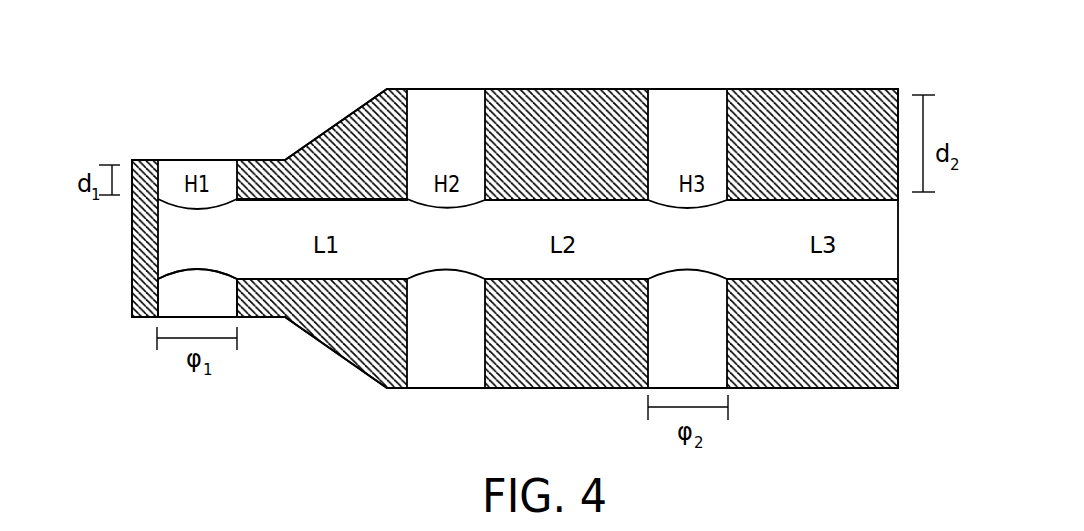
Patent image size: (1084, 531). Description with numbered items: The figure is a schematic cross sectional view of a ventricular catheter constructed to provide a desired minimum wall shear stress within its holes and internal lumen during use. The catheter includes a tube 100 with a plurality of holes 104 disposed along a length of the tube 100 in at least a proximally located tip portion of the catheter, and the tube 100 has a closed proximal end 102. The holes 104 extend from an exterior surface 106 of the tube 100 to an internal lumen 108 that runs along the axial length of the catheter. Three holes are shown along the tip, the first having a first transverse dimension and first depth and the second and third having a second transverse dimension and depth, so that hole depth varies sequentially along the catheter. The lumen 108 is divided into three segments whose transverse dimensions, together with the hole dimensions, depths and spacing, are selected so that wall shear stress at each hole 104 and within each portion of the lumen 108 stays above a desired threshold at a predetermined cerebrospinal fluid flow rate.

The tube 100 is at (174, 130).
The closed proximal end 102 is at (132, 260).
The holes 104 is at (443, 89).
The exterior surface 106 is at (567, 90).
The internal lumen 108 is at (183, 262).